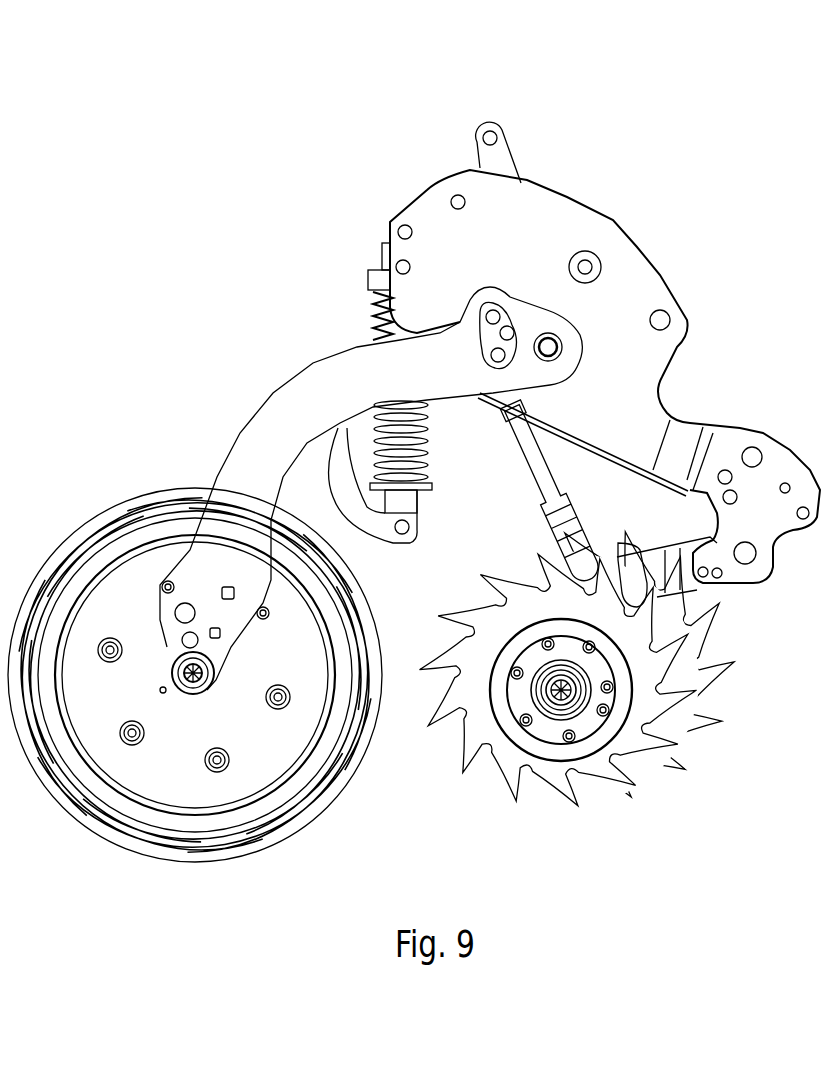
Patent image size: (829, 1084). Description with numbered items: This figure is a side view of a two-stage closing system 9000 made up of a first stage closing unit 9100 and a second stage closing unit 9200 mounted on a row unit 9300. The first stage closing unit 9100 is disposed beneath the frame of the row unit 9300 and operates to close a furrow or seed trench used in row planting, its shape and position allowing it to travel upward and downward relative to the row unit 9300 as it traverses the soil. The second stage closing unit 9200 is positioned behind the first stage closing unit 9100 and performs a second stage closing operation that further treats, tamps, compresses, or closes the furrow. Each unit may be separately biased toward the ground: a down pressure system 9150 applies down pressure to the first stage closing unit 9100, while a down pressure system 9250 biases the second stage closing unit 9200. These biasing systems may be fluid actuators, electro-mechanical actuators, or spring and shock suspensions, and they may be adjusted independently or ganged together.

The two-stage closing system 9000 is at (292, 180).
The first stage closing unit 9100 is at (762, 686).
The down pressure system 9150 is at (553, 467).
The second stage closing unit 9200 is at (216, 375).
The down pressure system 9250 is at (377, 317).
The row unit 9300 is at (729, 320).